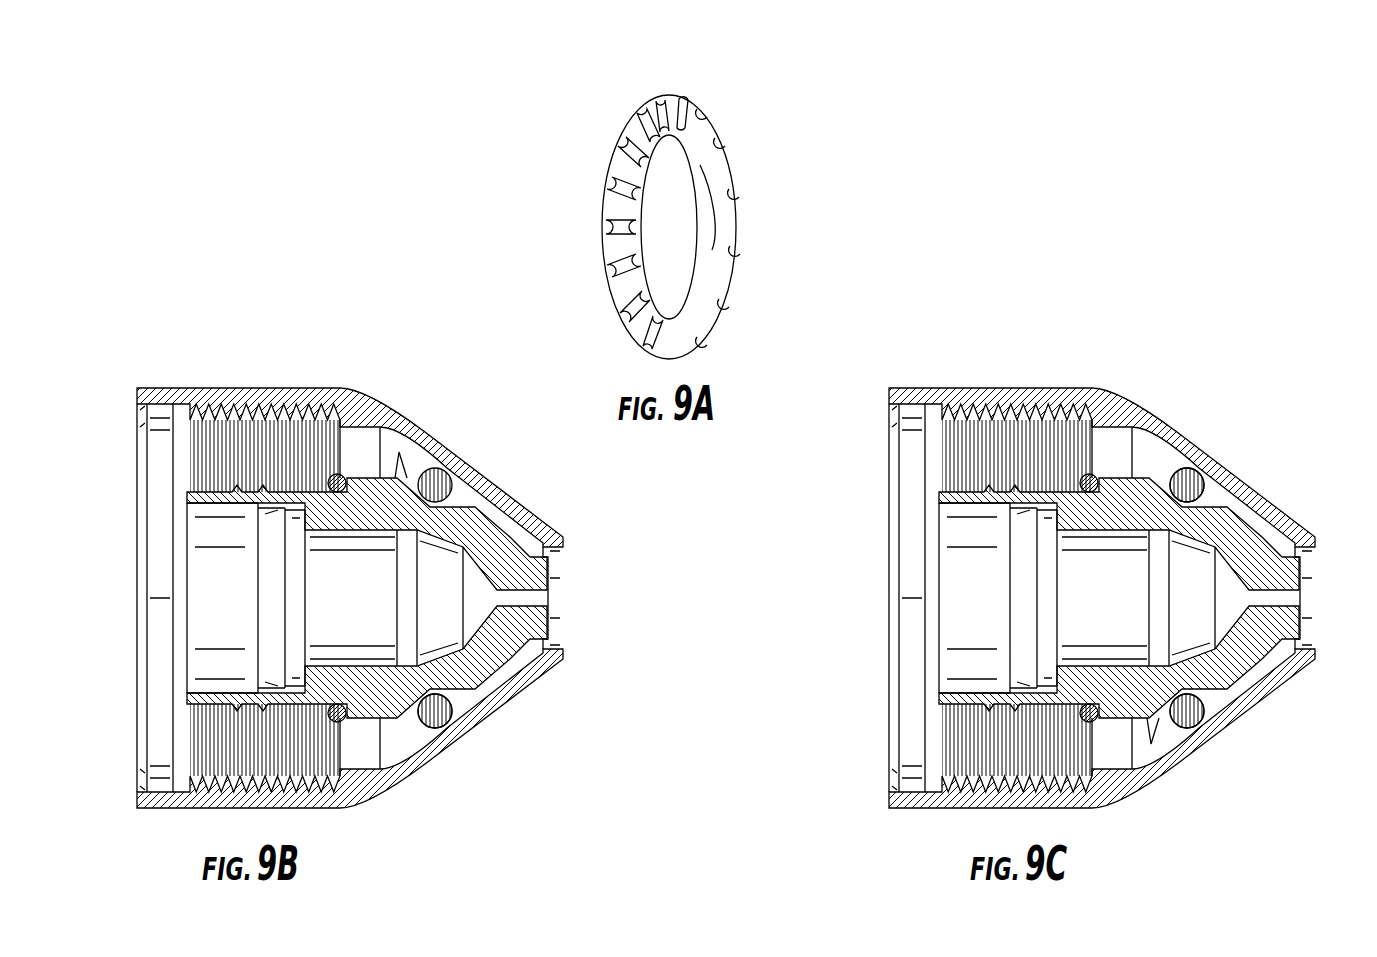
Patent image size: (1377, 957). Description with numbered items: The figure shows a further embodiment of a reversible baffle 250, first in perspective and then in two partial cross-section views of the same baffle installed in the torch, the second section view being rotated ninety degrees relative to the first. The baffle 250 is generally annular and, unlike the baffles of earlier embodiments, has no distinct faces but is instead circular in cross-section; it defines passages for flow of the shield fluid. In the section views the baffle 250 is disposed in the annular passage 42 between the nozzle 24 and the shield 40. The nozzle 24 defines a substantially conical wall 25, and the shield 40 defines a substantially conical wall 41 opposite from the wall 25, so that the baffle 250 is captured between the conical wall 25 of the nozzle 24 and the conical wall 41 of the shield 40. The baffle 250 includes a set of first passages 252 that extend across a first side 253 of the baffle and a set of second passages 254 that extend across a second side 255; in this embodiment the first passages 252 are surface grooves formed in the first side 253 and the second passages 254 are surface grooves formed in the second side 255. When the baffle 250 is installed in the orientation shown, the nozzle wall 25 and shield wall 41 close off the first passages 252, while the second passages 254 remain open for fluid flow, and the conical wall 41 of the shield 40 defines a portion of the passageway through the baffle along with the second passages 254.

In FIG. 9B, the nozzle 24 is at (555, 627).
In FIG. 9C, the nozzle 24 is at (1333, 598).
In FIG. 9B, the conical wall 25 is at (398, 455).
In FIG. 9C, the conical wall 25 is at (1077, 622).
In FIG. 9B, the shield 40 is at (399, 783).
In FIG. 9C, the shield 40 is at (1119, 650).
In FIG. 9B, the conical wall 41 is at (468, 495).
In FIG. 9C, the conical wall 41 is at (1102, 598).
In FIG. 9B, the annular passage 42 is at (357, 440).
In FIG. 9C, the annular passage 42 is at (1025, 533).
In FIG. 9A, the reversible baffle 250 is at (758, 168).
In FIG. 9B, the reversible baffle 250 is at (416, 468).
In FIG. 9C, the reversible baffle 250 is at (1206, 542).
In FIG. 9A, the first passages 252 is at (702, 92).
In FIG. 9C, the first passages 252 is at (1225, 557).
In FIG. 9A, the first side 253 is at (708, 178).
In FIG. 9A, the second passages 254 is at (608, 280).
In FIG. 9B, the second passages 254 is at (454, 724).
In FIG. 9A, the second side 255 is at (643, 130).